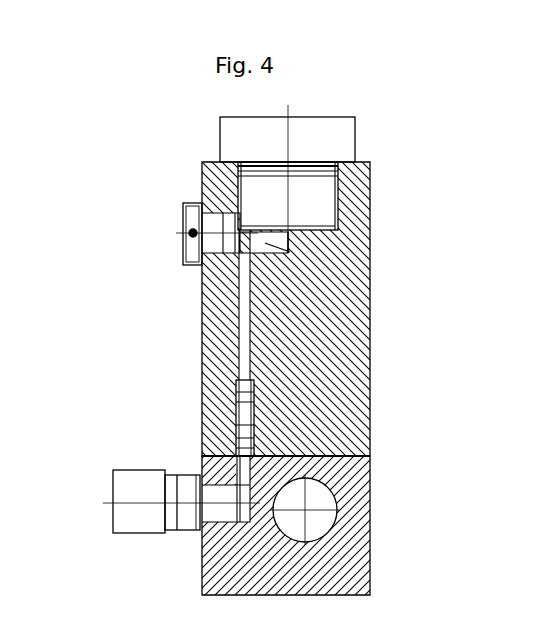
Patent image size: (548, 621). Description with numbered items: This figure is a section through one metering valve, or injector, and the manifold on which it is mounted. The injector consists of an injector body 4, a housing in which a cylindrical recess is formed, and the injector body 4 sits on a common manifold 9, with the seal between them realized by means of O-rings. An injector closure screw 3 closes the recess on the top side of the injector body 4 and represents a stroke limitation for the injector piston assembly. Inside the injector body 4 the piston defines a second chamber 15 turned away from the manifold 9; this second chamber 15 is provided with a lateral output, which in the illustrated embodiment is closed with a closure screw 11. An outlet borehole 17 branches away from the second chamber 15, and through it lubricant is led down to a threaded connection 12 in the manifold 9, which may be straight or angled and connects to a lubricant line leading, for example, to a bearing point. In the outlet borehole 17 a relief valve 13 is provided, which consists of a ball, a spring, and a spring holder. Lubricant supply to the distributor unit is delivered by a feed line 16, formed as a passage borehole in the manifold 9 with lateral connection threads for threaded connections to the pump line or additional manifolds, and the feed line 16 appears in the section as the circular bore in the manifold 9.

The injector closure screw 3 is at (330, 150).
The injector body 4 is at (333, 245).
The manifold 9 is at (347, 545).
The closure screw 11 is at (195, 217).
The threaded connection 12 is at (137, 493).
The relief valve 13 is at (232, 407).
The second chamber 15 is at (293, 237).
The feed line 16 is at (370, 457).
The outlet borehole 17 is at (202, 285).